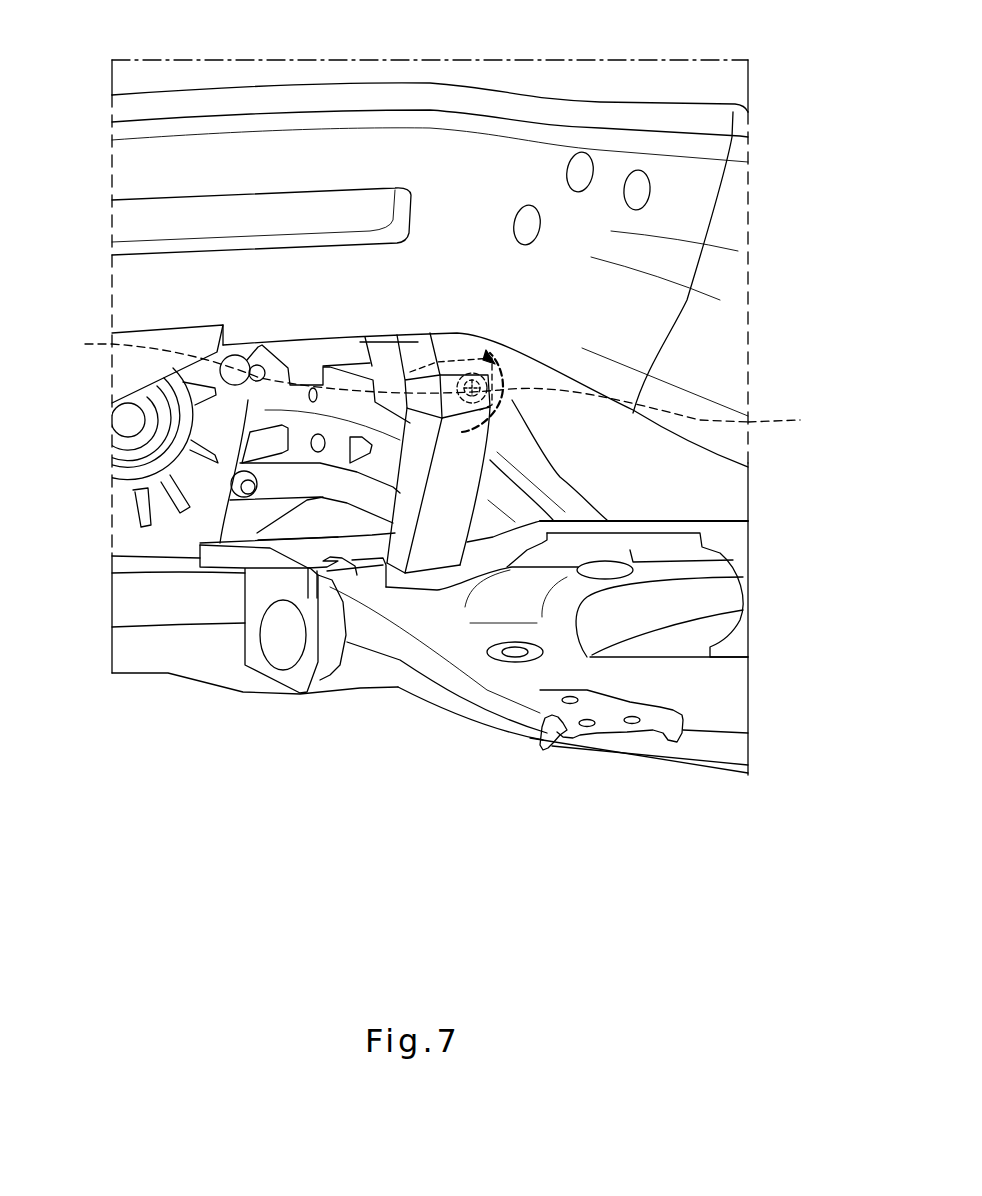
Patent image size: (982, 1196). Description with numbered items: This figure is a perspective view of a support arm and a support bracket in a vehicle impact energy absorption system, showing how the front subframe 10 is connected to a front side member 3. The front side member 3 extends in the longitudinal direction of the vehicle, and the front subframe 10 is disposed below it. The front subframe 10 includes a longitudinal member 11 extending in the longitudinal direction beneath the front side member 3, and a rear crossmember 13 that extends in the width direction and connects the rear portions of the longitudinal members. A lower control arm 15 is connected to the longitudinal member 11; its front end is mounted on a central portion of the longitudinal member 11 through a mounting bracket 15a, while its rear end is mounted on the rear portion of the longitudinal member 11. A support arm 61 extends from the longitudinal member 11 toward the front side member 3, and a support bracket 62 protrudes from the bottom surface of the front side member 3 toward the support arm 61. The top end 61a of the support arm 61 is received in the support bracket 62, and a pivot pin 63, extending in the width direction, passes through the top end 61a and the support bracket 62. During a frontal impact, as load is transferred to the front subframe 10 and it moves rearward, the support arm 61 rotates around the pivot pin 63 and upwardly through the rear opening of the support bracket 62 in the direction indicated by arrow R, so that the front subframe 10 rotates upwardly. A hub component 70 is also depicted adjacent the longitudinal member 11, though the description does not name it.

The front side member 3 is at (300, 148).
The support bracket 62 is at (420, 350).
The top end of the support arm 61a is at (390, 376).
The pivot pin 63 is at (793, 415).
The rear crossmember 13 is at (525, 447).
The support arm 61 is at (465, 483).
The hub / motor 70 is at (163, 500).
The longitudinal member 11 is at (165, 647).
The mounting bracket 15a is at (250, 675).
The front subframe 10 is at (305, 712).
The lower control arm 15 is at (493, 678).
The arrow indicating rotation direction R is at (500, 373).